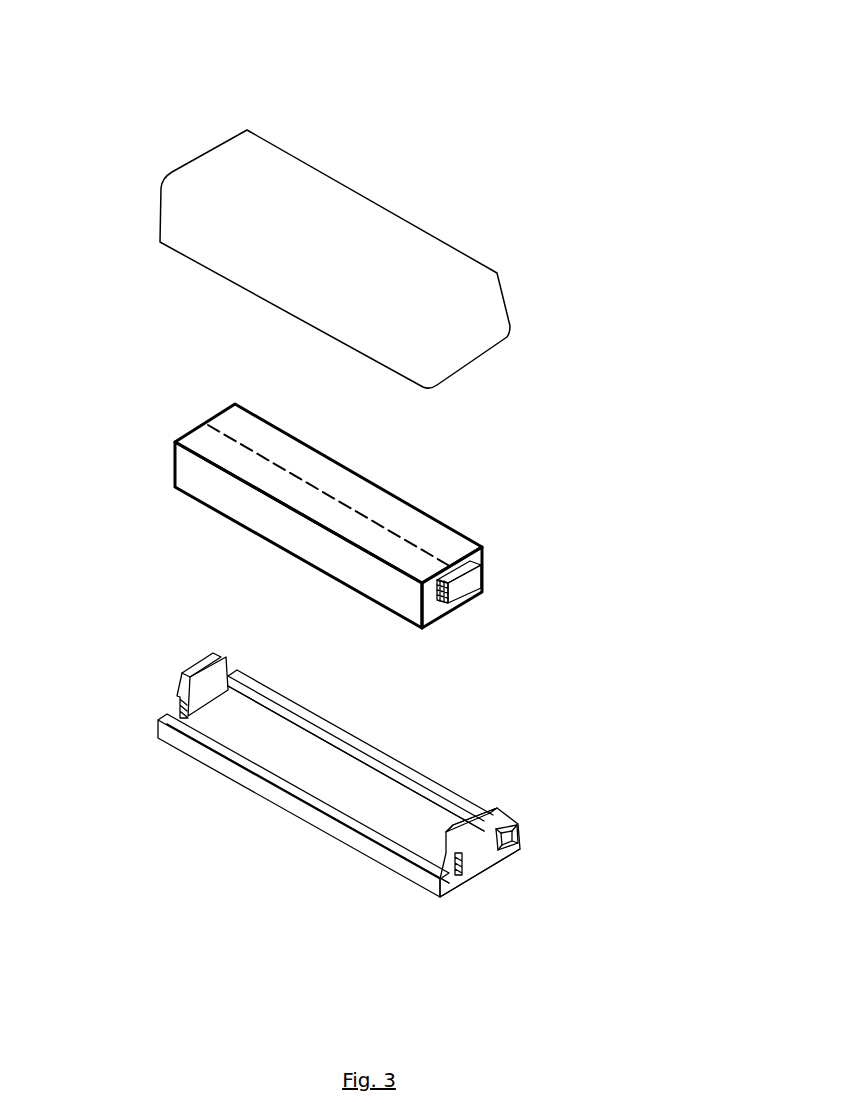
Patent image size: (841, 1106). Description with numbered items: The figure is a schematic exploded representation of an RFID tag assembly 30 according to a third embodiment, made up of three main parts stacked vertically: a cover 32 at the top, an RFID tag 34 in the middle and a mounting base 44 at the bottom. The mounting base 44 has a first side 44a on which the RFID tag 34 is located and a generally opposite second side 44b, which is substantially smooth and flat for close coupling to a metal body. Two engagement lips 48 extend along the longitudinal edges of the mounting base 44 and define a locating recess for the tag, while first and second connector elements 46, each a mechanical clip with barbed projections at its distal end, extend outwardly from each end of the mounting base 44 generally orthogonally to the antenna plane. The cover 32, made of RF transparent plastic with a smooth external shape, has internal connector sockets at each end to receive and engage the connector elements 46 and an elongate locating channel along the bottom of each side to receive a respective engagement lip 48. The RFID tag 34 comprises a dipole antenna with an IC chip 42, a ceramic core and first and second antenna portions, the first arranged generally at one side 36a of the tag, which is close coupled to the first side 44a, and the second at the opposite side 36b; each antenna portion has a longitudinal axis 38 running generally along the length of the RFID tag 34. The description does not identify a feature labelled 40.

The RFID tag assembly 30 is at (103, 74).
The cover 32 is at (425, 253).
The RFID tag 34 is at (339, 532).
The one side of the RFID tag 36a is at (298, 571).
The opposite side of the RFID tag 36b is at (354, 477).
The longitudinal axis 38 is at (240, 440).
The end face 40 is at (403, 509).
The IC chip 42 is at (465, 587).
The mounting base 44 is at (328, 807).
The first side of the mounting base 44a is at (299, 743).
The second side of the mounting base 44b is at (450, 909).
The connector element 46 is at (182, 675).
The engagement lip 48 is at (225, 768).